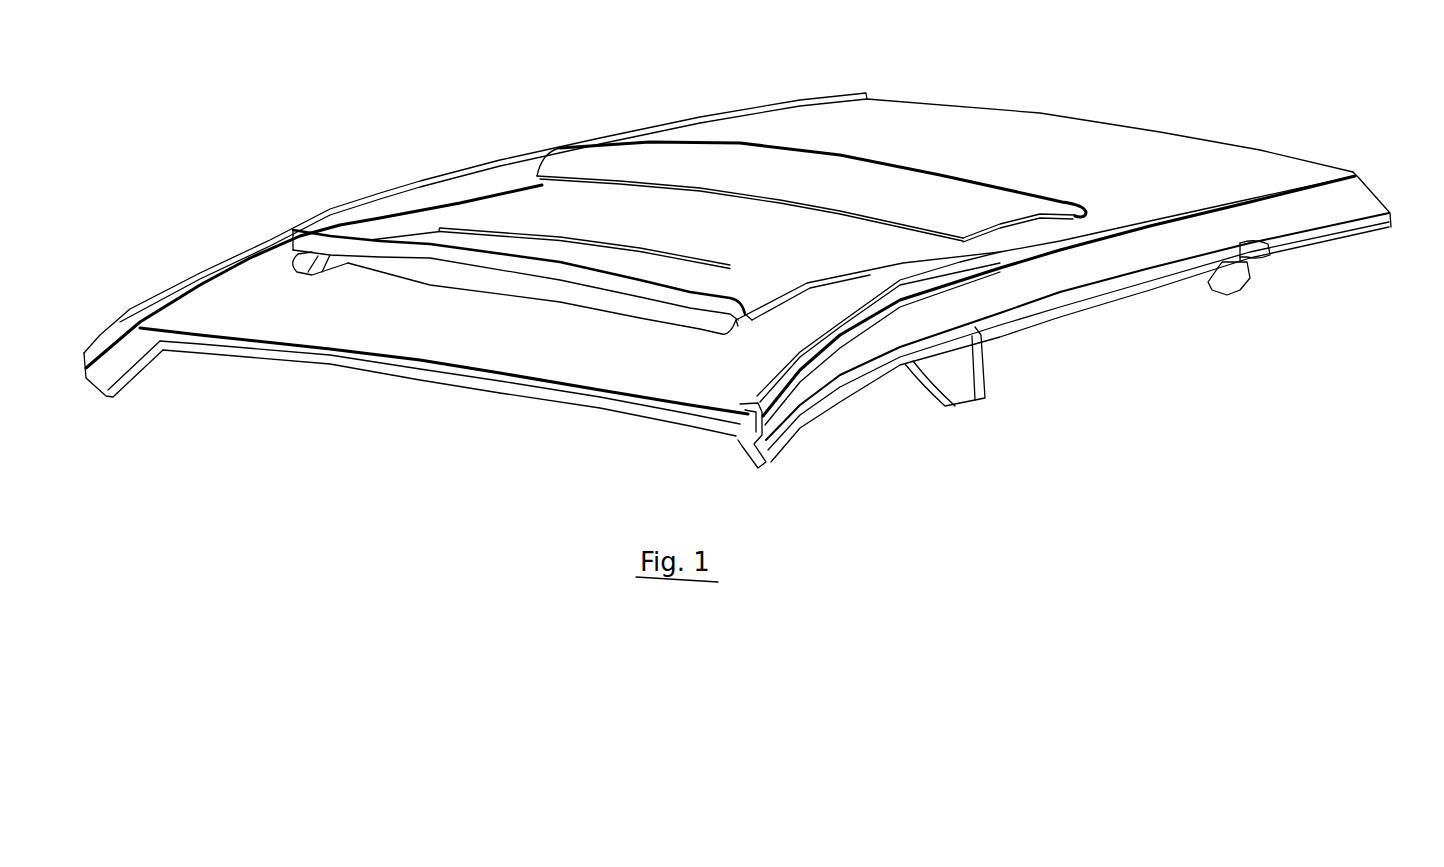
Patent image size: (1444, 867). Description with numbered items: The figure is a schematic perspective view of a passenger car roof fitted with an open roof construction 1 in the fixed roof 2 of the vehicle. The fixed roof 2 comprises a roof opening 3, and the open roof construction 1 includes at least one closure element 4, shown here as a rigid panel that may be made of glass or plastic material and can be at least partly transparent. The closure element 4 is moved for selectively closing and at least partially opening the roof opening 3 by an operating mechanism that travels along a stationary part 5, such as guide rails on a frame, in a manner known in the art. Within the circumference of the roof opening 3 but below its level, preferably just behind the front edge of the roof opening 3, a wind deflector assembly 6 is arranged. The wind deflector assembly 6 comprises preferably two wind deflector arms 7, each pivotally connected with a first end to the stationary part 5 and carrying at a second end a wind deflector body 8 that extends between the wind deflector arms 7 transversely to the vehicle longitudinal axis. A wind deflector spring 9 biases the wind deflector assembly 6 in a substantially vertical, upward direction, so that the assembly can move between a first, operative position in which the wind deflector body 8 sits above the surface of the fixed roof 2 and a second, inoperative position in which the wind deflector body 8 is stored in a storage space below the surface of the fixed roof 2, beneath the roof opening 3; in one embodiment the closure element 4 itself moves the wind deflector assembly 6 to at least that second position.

The open roof construction 1 is at (500, 206).
The fixed roof 2 is at (894, 118).
The roof opening 3 is at (903, 263).
The closure element 4 is at (551, 200).
The stationary part 5 is at (404, 233).
The wind deflector assembly 6 is at (297, 243).
The wind deflector arms 7 is at (760, 306).
The wind deflector body 8 is at (627, 285).
The wind deflector spring 9 is at (753, 316).